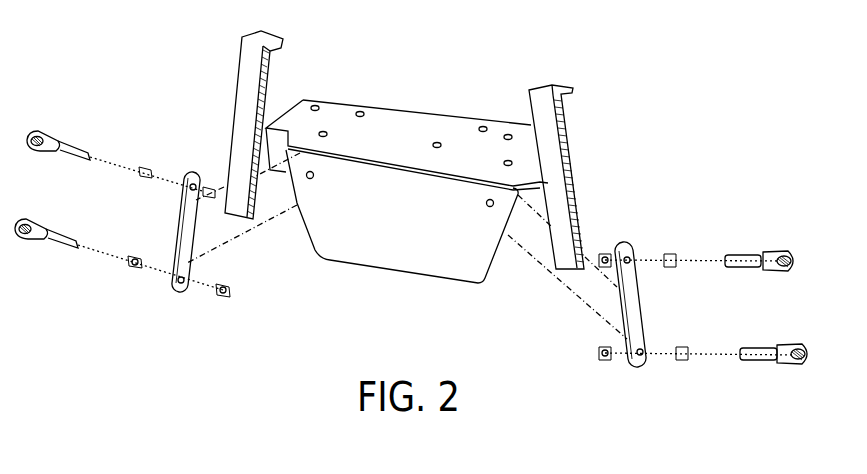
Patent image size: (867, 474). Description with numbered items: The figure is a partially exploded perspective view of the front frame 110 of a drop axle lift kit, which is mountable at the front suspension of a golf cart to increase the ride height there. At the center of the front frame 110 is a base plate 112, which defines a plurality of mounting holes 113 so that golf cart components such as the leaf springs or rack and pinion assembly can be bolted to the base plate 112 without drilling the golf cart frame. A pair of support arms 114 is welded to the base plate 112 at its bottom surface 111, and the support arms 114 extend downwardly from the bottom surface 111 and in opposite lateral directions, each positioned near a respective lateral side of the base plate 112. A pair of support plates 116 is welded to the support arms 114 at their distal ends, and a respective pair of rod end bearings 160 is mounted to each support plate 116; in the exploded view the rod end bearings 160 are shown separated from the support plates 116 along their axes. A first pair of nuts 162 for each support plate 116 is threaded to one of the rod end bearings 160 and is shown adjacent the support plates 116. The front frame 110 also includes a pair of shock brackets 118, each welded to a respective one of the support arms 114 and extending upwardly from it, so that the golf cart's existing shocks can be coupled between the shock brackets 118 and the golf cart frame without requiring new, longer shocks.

The front frame 110 is at (684, 85).
The bottom surface 111 is at (401, 172).
The base plate 112 is at (420, 120).
The mounting holes 113 is at (361, 108).
The support arms 114 is at (227, 228).
The support plates 116 is at (177, 233).
The shock brackets 118 is at (244, 126).
The rod end bearings 160 is at (70, 150).
The first nuts 162 is at (215, 303).